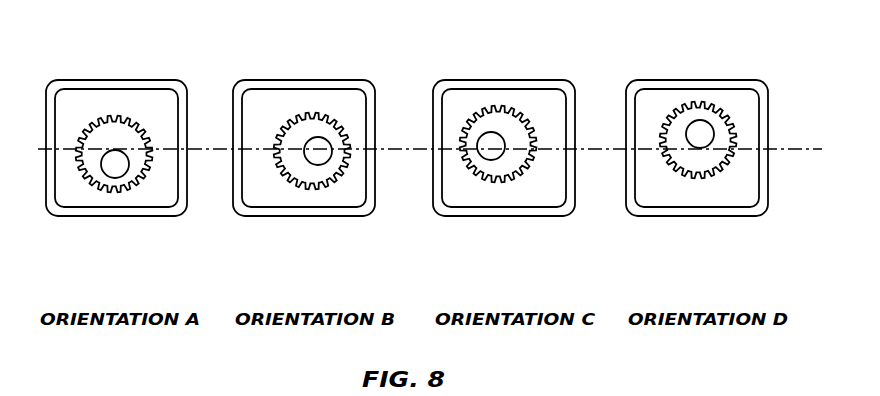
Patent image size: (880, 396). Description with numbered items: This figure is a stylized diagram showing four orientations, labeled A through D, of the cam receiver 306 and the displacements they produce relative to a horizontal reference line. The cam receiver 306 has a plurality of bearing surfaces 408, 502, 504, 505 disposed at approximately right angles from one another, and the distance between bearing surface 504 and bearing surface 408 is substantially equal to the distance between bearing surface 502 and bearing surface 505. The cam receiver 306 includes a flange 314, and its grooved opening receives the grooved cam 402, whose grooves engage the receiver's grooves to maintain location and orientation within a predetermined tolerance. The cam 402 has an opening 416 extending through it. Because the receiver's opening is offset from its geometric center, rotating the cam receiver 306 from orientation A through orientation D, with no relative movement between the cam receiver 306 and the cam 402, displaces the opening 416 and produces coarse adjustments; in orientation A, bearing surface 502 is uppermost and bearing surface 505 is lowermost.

The cam receiver 306 is at (160, 100).
The flange 314 is at (133, 84).
The cam 402 is at (116, 178).
The bearing surface 408 is at (55, 183).
The opening 416 is at (115, 153).
The bearing surface 502 is at (98, 90).
The bearing surface 504 is at (180, 163).
The bearing surface 505 is at (88, 208).